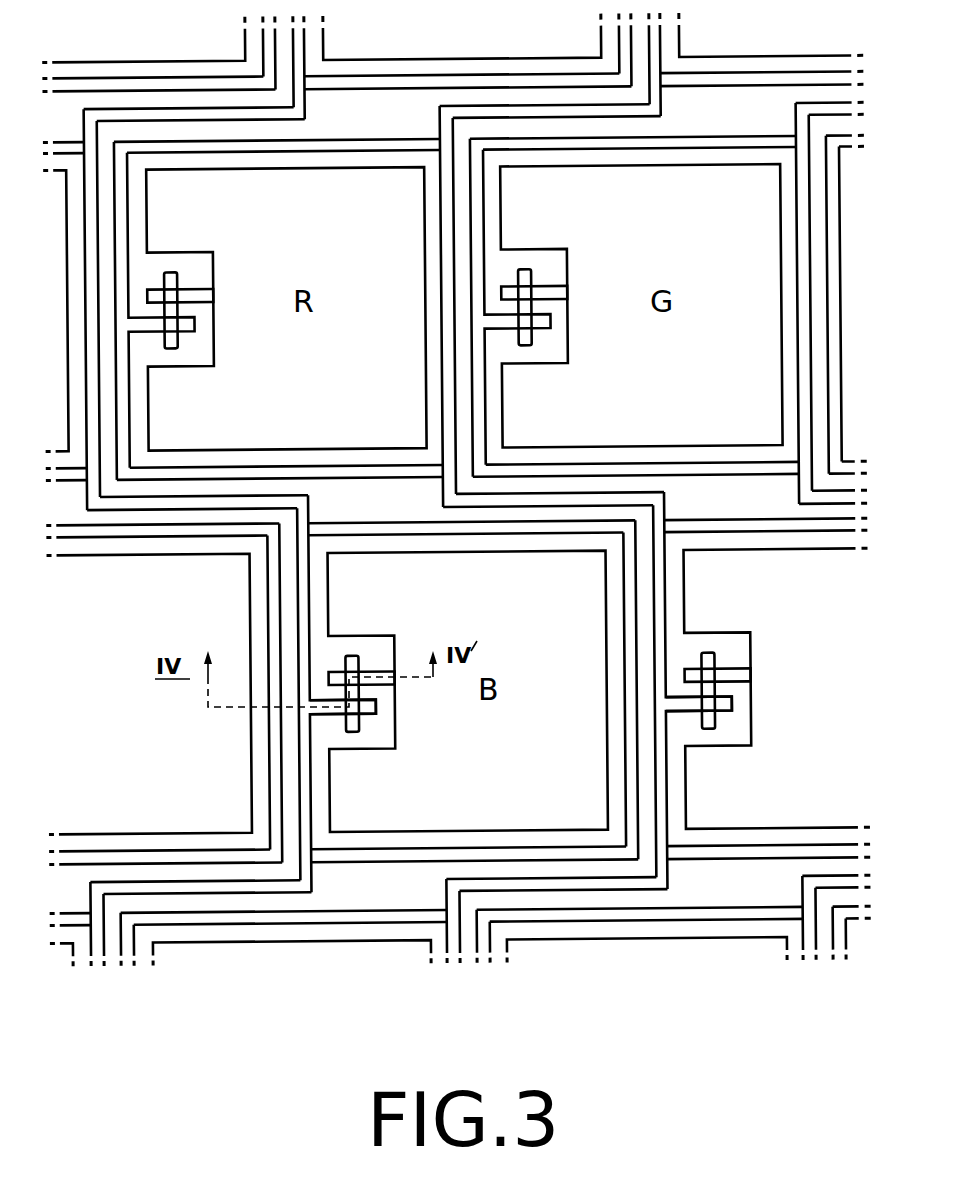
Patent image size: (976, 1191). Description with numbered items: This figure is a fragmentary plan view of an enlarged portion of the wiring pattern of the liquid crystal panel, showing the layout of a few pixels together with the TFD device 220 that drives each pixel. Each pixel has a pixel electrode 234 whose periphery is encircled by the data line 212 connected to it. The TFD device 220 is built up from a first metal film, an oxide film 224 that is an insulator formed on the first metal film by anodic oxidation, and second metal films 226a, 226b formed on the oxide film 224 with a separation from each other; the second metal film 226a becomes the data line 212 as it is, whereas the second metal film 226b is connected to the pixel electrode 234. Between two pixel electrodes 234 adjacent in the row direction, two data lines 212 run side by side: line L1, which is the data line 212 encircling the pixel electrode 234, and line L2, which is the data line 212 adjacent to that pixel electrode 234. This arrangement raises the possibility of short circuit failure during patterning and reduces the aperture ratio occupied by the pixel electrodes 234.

The data line 212 is at (476, 950).
The TFD device 220 is at (289, 683).
The oxide film 224 is at (340, 693).
The second metal film 226a is at (339, 718).
The second metal film 226b is at (377, 668).
The pixel electrode 234 is at (378, 590).
The line L1 is at (632, 604).
The line L2 is at (660, 614).